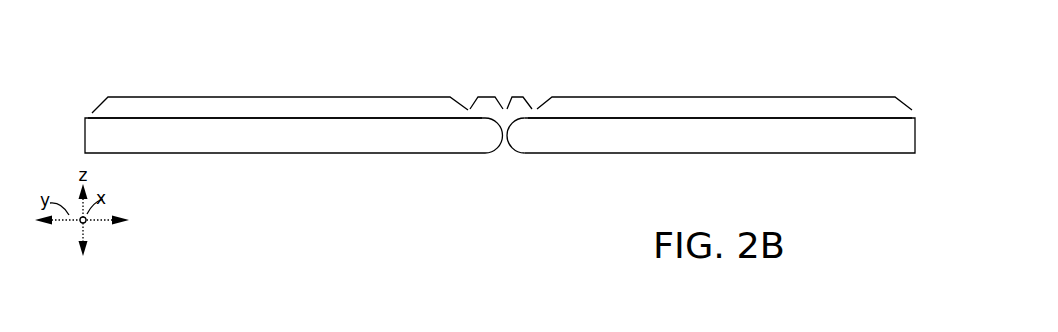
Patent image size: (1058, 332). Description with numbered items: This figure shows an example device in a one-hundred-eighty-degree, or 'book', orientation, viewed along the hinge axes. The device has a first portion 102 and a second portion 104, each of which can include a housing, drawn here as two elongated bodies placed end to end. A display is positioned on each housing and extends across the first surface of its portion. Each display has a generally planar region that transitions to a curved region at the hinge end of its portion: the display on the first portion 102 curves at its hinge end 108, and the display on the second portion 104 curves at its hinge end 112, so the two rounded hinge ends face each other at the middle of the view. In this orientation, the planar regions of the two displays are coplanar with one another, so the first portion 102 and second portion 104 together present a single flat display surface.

The first portion 102 is at (245, 160).
The second portion 104 is at (805, 162).
The hinge end 108 is at (498, 149).
The hinge end 112 is at (508, 145).